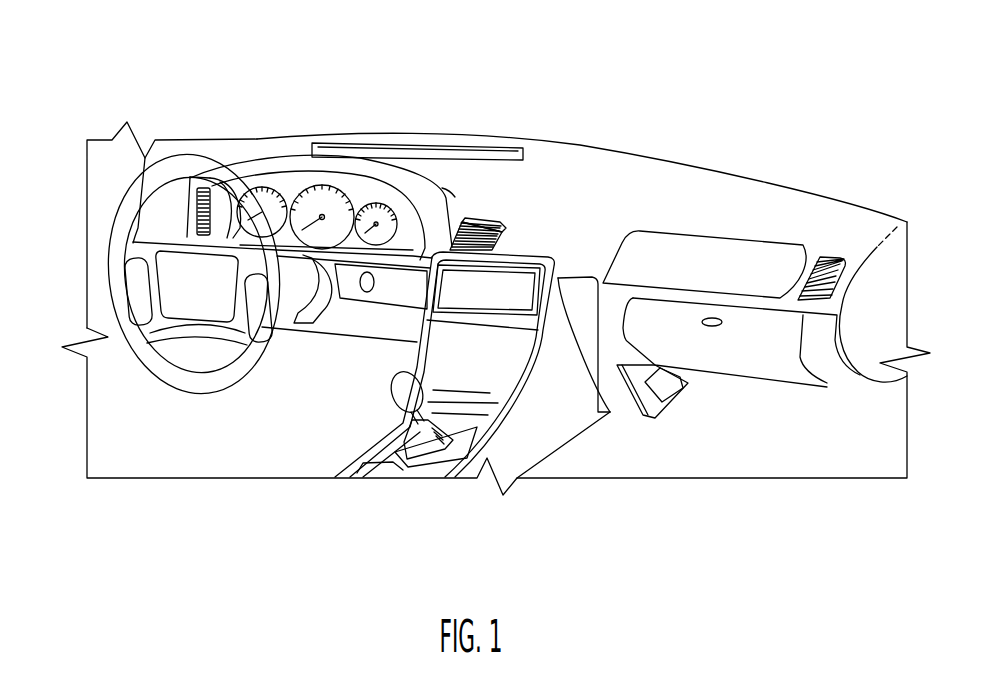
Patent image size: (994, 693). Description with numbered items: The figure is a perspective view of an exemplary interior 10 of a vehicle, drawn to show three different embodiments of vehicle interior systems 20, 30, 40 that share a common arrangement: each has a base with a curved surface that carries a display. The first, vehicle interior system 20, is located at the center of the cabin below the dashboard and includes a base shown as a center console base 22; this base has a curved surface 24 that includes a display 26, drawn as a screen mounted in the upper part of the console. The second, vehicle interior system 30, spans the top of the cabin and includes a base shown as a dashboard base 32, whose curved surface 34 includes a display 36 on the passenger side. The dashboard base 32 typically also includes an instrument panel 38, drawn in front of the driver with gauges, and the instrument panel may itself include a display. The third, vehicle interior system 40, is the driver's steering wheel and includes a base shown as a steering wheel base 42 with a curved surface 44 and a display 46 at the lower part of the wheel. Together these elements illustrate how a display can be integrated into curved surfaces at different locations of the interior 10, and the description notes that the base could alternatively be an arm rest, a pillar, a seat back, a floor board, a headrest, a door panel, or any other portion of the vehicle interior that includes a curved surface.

The interior 10 is at (765, 60).
The vehicle interior system 20 is at (607, 410).
The center console base 22 is at (532, 388).
The curved surface 24 is at (428, 354).
The display 26 is at (518, 278).
The vehicle interior system 30 is at (852, 108).
The dashboard base 32 is at (610, 163).
The curved surface 34 is at (715, 193).
The display 36 is at (775, 253).
The instrument panel 38 is at (290, 190).
The vehicle interior system 40 is at (60, 163).
The steering wheel base 42 is at (197, 332).
The curved surface 44 is at (152, 247).
The display 46 is at (170, 320).